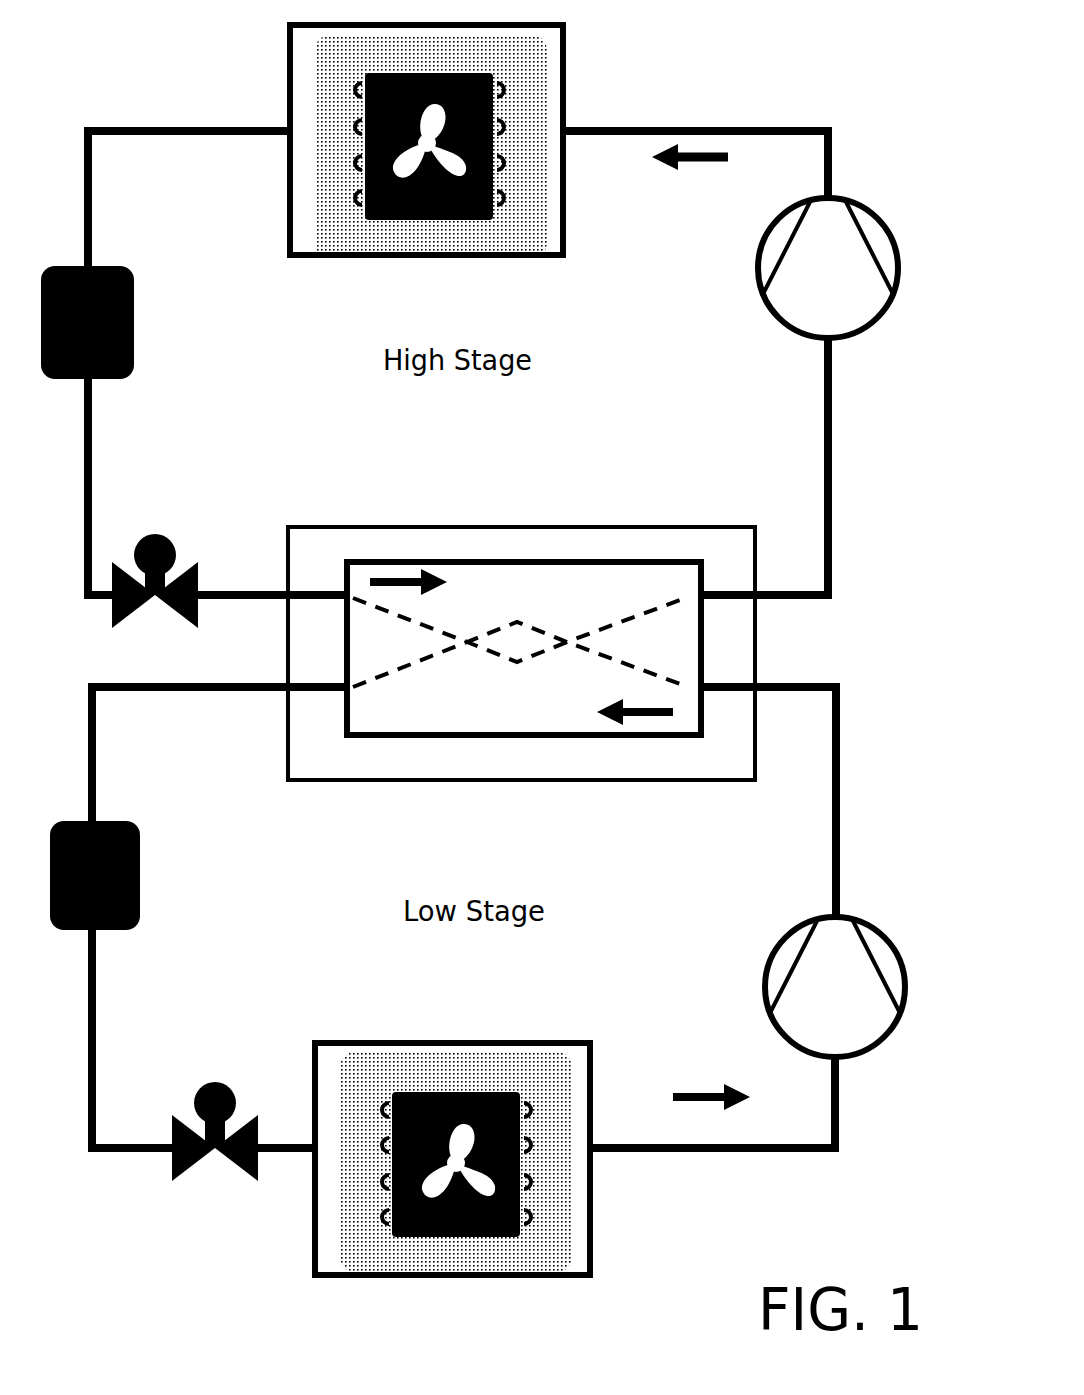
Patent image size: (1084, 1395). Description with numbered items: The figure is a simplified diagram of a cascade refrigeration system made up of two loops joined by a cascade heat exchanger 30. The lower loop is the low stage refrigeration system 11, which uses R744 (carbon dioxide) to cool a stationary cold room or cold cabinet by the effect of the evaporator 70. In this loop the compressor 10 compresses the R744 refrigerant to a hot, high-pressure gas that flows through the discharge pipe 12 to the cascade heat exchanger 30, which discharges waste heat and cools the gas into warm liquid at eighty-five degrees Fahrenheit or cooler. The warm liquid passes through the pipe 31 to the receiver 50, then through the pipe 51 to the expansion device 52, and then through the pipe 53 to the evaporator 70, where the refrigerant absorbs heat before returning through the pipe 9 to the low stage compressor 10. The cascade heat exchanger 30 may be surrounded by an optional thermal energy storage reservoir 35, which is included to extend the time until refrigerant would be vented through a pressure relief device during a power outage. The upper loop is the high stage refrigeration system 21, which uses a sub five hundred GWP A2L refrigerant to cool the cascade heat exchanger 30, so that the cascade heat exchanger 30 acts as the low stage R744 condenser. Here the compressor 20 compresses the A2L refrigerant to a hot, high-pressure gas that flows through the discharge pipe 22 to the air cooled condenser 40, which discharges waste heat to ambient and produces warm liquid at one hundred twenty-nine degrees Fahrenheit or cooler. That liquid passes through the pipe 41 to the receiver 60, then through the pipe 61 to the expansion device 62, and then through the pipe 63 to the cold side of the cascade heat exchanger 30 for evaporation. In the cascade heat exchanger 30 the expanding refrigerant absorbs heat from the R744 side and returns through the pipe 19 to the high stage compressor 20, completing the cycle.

The pipe 9 is at (775, 1153).
The compressor 10 is at (898, 953).
The low stage refrigeration system 11 is at (882, 718).
The discharge pipe 12 is at (842, 785).
The pipe 19 is at (832, 382).
The compressor 20 is at (895, 240).
The high stage refrigeration system 21 is at (893, 132).
The discharge pipe 22 is at (800, 128).
The cascade heat exchanger 30 is at (524, 648).
The pipe 31 is at (89, 770).
The thermal energy storage reservoir 35 is at (288, 730).
The air cooled condenser 40 is at (458, 256).
The pipe 41 is at (210, 128).
The receiver 50 is at (137, 842).
The pipe 51 is at (88, 990).
The expansion device 52 is at (216, 1082).
The pipe 53 is at (292, 1152).
The receiver 60 is at (103, 268).
The pipe 61 is at (83, 428).
The expansion device 62 is at (199, 578).
The pipe 63 is at (232, 600).
The evaporator 70 is at (488, 1276).